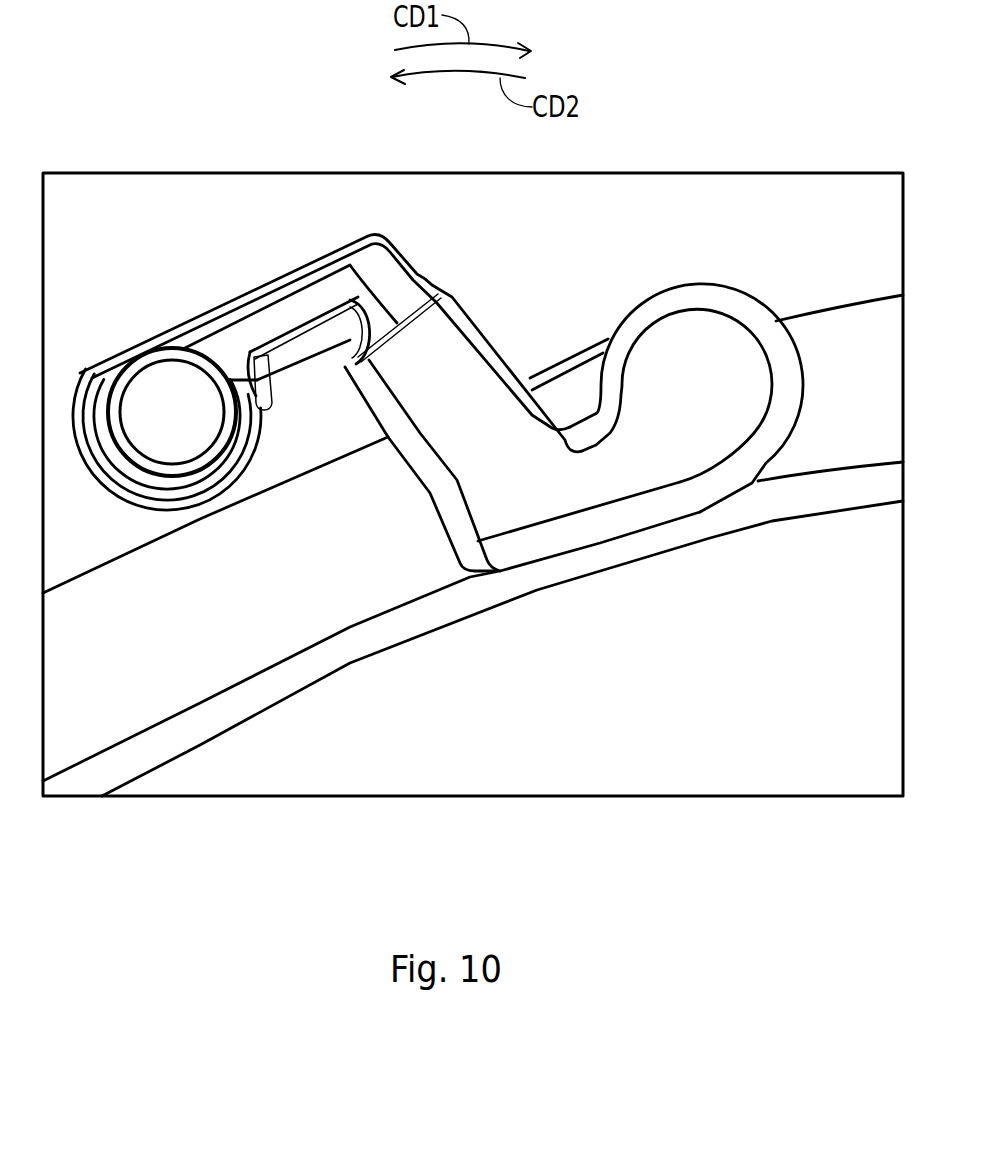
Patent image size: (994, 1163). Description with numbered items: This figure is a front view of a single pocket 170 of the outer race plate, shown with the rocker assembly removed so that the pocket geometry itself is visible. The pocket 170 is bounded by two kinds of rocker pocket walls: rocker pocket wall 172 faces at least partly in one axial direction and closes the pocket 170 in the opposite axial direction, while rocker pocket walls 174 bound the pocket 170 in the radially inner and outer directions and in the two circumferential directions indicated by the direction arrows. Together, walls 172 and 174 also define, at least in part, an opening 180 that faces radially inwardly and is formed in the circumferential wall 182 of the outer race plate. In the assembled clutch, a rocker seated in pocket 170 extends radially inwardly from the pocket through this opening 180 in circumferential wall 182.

The pocket 170 is at (507, 327).
The rocker pocket wall 172 is at (726, 378).
The rocker pocket wall 174 is at (258, 306).
The opening 180 is at (630, 548).
The circumferential wall 182 is at (329, 682).